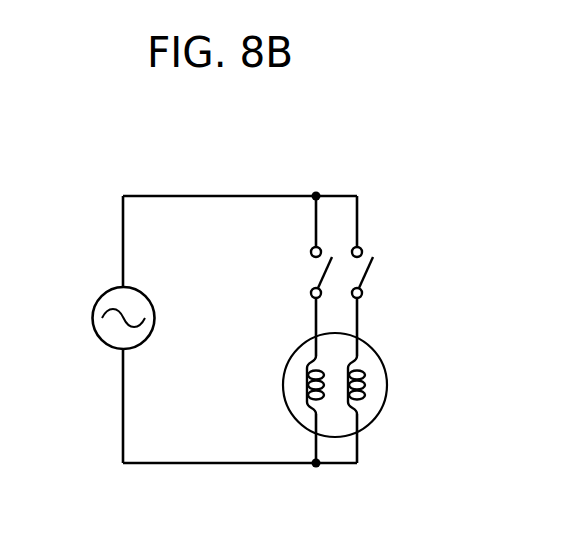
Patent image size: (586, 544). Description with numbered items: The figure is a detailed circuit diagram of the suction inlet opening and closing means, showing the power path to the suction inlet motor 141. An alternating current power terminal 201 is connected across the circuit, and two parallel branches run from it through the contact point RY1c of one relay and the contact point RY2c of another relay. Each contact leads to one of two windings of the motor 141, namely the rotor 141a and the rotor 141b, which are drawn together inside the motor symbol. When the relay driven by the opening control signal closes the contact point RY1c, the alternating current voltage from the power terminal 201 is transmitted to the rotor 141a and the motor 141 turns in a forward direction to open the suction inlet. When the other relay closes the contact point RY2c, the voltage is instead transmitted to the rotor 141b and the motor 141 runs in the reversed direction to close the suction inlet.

The alternating current power terminal 201 is at (100, 290).
The contact point of relay RY1 RY1c is at (282, 272).
The contact point of relay RY2 RY2c is at (401, 272).
The suction inlet motor 141 is at (334, 384).
The rotor 141a is at (255, 368).
The rotor 141b is at (414, 408).